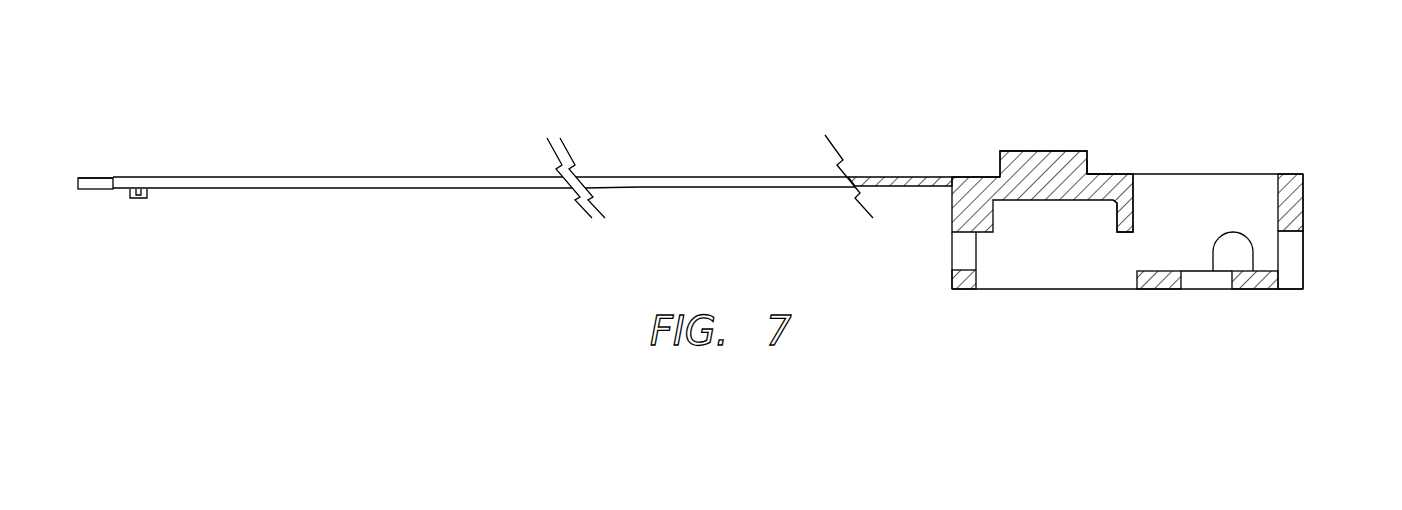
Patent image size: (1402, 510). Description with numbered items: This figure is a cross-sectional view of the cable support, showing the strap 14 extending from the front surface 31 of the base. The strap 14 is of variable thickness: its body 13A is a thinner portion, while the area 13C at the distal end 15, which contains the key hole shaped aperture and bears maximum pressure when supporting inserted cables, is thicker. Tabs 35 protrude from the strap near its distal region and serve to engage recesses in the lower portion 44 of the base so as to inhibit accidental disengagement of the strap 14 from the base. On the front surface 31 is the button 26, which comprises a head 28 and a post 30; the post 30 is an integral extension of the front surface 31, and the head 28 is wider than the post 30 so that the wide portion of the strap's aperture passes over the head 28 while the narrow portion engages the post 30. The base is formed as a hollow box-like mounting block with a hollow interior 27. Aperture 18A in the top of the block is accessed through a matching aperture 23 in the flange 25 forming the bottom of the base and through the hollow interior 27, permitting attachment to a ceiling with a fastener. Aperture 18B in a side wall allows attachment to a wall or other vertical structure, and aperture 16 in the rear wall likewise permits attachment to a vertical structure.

The distal end 15 is at (147, 137).
The area at distal end 13C is at (203, 178).
The strap 14 is at (405, 178).
The body 13A is at (680, 180).
The tabs 35 is at (138, 199).
The button 26 is at (978, 137).
The head 28 is at (1037, 152).
The front surface 31 is at (1086, 170).
The post 30 is at (1107, 172).
The lower portion 44 is at (1132, 198).
The hollow interior 27 is at (1257, 185).
The matching aperture 23 is at (958, 248).
The flange 25 is at (965, 289).
The aperture 16 is at (1195, 279).
The aperture 18A is at (1290, 245).
The aperture 18B is at (1232, 260).